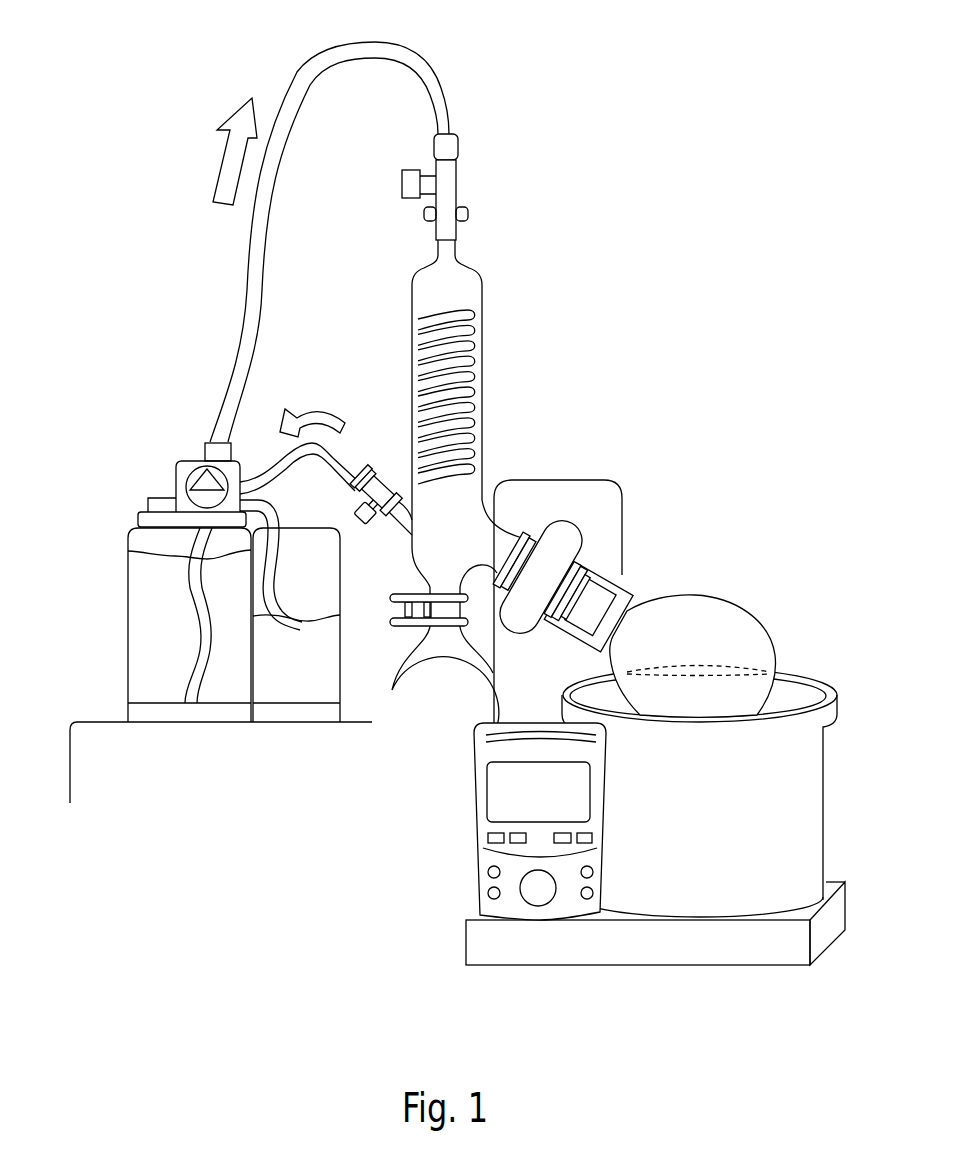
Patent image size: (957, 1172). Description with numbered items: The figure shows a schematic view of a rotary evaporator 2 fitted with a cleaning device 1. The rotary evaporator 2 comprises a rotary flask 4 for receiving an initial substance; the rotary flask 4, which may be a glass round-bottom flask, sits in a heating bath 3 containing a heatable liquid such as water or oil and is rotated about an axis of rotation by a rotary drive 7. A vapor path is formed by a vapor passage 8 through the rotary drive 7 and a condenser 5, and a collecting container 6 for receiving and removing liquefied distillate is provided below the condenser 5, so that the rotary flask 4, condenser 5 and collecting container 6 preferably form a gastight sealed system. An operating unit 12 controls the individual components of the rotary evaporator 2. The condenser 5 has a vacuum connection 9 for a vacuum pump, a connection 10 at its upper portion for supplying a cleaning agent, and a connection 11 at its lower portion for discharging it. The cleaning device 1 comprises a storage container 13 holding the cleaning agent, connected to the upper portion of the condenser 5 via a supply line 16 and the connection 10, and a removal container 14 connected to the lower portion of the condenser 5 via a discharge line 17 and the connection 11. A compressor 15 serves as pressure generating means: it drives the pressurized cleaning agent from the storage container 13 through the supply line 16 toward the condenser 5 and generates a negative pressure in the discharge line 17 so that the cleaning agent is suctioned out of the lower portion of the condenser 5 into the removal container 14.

The cleaning device 1 is at (166, 232).
The rotary evaporator 2 is at (586, 311).
The heating bath 3 is at (823, 668).
The rotary flask 4 is at (713, 608).
The condenser 5 is at (481, 275).
The collecting container 6 is at (417, 745).
The rotary drive 7 is at (558, 522).
The vapor passage 8 is at (610, 578).
The vacuum connection 9 is at (402, 182).
The connection for supplying a cleaning agent 10 is at (450, 146).
The connection for discharging the cleaning agent 11 is at (378, 520).
The operating unit 12 is at (479, 828).
The storage container 13 is at (141, 617).
The removal container 14 is at (320, 663).
The compressor 15 is at (187, 465).
The supply line 16 is at (252, 287).
The discharge line 17 is at (320, 450).